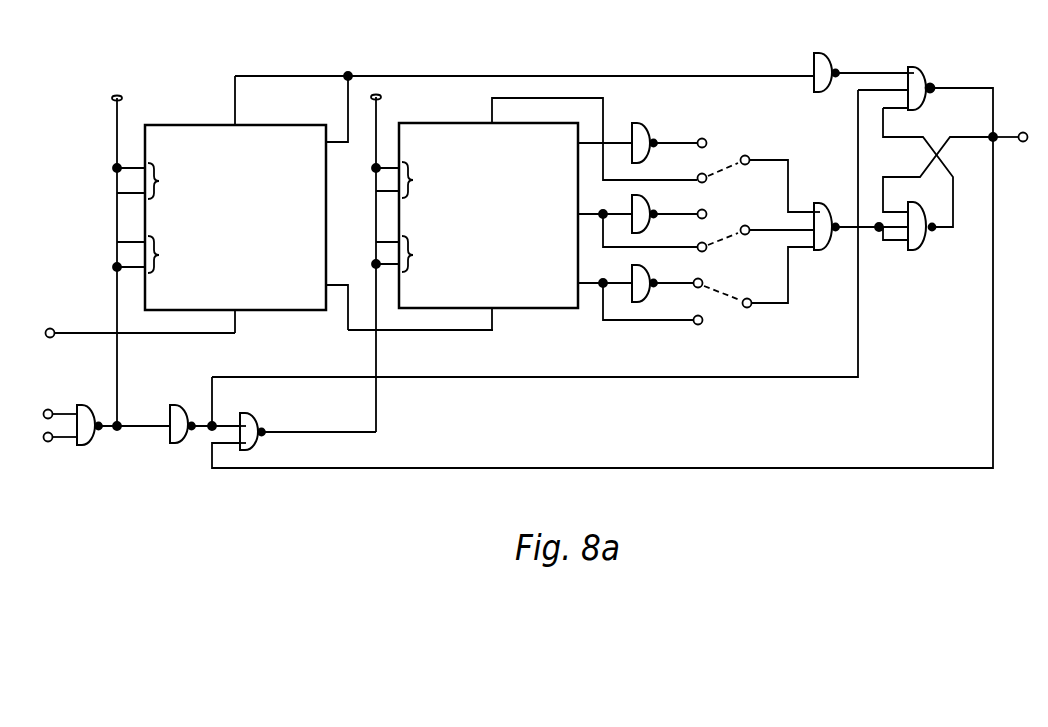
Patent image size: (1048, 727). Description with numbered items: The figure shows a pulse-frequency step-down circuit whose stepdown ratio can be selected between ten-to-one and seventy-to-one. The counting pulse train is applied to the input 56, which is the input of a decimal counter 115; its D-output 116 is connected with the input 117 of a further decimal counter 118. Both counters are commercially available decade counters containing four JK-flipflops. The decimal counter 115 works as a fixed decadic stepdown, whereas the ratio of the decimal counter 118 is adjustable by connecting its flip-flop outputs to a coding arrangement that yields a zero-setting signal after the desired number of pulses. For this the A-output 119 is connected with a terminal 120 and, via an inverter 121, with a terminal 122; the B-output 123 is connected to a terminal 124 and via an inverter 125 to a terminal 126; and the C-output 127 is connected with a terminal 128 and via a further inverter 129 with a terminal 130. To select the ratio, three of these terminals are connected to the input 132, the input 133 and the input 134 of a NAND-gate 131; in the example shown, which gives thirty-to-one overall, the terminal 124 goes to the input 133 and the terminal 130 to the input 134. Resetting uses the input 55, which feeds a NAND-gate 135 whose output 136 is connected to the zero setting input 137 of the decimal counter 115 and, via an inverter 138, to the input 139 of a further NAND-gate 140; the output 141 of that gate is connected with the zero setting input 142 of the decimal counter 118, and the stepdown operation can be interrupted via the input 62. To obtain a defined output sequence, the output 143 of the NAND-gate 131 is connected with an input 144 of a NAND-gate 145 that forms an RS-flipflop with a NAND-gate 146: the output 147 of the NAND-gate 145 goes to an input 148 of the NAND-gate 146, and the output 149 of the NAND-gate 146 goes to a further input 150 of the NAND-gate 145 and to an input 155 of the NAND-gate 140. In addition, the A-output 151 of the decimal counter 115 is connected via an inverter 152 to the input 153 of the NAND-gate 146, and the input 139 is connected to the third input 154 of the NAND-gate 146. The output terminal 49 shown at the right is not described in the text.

The output terminal 49 is at (1022, 142).
The input 55 is at (50, 410).
The input 56 is at (50, 328).
The input 62 is at (50, 443).
The decimal counter 115 is at (287, 311).
The D-output 116 is at (330, 283).
The input 117 is at (493, 311).
The decimal counter 118 is at (537, 300).
The A-output 119 is at (585, 135).
The terminal 120 is at (708, 180).
The inverter 121 is at (646, 126).
The terminal 122 is at (706, 138).
The B-output 123 is at (595, 200).
The terminal 124 is at (706, 252).
The inverter 125 is at (650, 200).
The terminal 126 is at (707, 214).
The C-output 127 is at (595, 270).
The terminal 128 is at (695, 324).
The inverter 129 is at (650, 270).
The terminal 130 is at (695, 287).
The NAND-gate 131 is at (820, 250).
The input 132 is at (750, 157).
The input 133 is at (750, 235).
The input 134 is at (752, 308).
The NAND-gate 135 is at (85, 446).
The output 136 is at (117, 430).
The zero setting input 137 is at (143, 268).
The inverter 138 is at (172, 405).
The input 139 is at (240, 420).
The NAND-gate 140 is at (258, 446).
The output 141 is at (264, 430).
The zero setting input 142 is at (397, 250).
The output 143 is at (830, 203).
The input 144 is at (903, 240).
The NAND-gate 145 is at (916, 250).
The NAND-gate 146 is at (933, 78).
The output 147 is at (934, 234).
The input 148 is at (918, 167).
The output 149 is at (935, 92).
The input 150 is at (908, 206).
The A-output 151 is at (330, 137).
The inverter 152 is at (813, 58).
The input 153 is at (910, 68).
The third input 154 is at (905, 76).
The input 155 is at (237, 436).